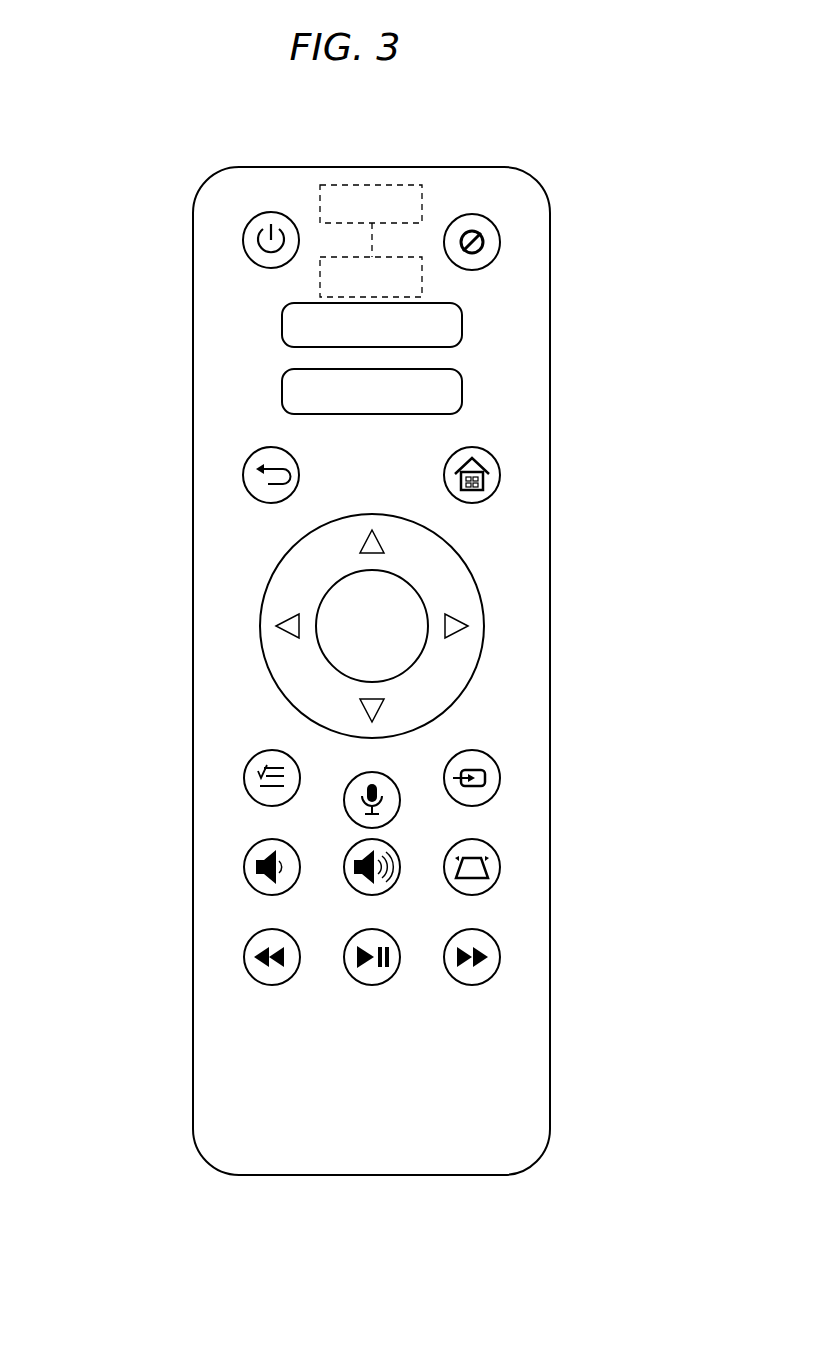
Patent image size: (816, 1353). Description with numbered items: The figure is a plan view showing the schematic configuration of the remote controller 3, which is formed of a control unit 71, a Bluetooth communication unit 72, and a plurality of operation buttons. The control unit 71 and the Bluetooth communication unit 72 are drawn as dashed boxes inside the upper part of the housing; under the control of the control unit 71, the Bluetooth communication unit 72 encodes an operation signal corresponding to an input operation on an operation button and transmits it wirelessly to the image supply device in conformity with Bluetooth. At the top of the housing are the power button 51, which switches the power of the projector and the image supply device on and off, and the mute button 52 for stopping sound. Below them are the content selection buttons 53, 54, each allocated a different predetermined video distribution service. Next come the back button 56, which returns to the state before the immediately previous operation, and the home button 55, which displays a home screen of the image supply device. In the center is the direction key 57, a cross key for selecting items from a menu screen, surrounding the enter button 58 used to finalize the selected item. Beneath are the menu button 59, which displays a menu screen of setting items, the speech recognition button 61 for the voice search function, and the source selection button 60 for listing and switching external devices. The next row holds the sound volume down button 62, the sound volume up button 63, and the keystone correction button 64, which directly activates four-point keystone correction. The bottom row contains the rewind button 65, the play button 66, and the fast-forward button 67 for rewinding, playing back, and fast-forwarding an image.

The remote controller 3 is at (560, 140).
The power button 51 is at (291, 212).
The mute button 52 is at (470, 212).
The content selection button 53 is at (462, 322).
The content selection button 54 is at (462, 389).
The home button 55 is at (500, 472).
The back button 56 is at (243, 471).
The direction key 57 is at (277, 587).
The enter button 58 is at (342, 667).
The menu button 59 is at (243, 775).
The source selection button 60 is at (500, 773).
The speech recognition button 61 is at (396, 817).
The sound volume down button 62 is at (243, 864).
The sound volume up button 63 is at (392, 890).
The keystone correction button 64 is at (500, 864).
The rewind button 65 is at (243, 953).
The play button 66 is at (372, 985).
The fast-forward button 67 is at (500, 953).
The control unit 71 is at (320, 291).
The Bluetooth communication unit 72 is at (345, 184).